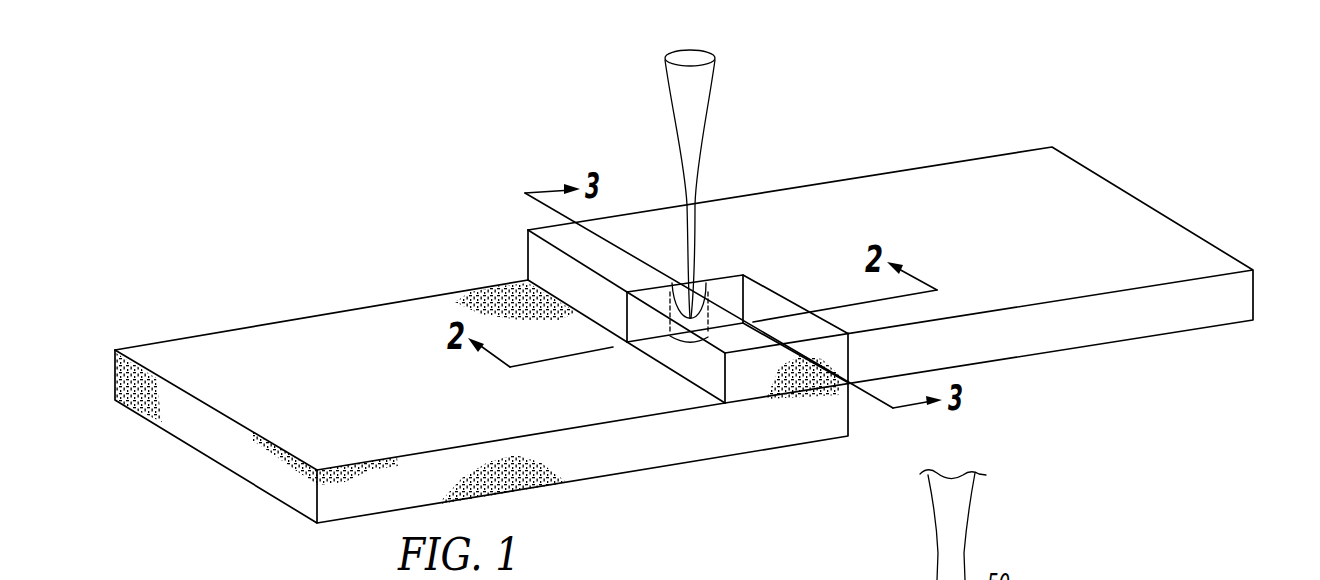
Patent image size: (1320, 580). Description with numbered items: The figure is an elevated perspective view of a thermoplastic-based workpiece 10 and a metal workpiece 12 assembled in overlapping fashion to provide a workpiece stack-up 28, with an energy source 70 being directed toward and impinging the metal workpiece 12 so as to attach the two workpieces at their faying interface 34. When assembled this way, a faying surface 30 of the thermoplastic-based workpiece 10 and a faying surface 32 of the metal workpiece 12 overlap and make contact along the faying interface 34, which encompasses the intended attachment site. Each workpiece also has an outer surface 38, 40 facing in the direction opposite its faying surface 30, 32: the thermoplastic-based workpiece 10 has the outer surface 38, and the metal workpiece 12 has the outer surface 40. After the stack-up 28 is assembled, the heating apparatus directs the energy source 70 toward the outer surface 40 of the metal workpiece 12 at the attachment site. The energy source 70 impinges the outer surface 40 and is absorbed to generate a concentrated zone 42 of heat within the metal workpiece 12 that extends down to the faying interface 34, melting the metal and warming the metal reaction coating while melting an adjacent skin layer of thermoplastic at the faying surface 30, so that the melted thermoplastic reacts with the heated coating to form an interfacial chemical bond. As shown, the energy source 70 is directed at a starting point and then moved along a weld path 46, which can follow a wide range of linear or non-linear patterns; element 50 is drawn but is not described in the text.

The thermoplastic-based workpiece 10 is at (101, 347).
The metal workpiece 12 is at (1050, 140).
The workpiece stack-up 28 is at (848, 450).
The faying surface of the thermoplastic-based workpiece 30 is at (731, 390).
The faying surface of the metal workpiece 32 is at (752, 418).
The faying interface 34 is at (793, 392).
The outer surface of the thermoplastic-based workpiece 38 is at (672, 468).
The outer surface of the metal workpiece 40 is at (833, 208).
The concentrated zone of heat 42 is at (704, 317).
The weld path 46 is at (648, 263).
The laser beam axis 50 is at (694, 240).
The energy source 70 is at (712, 123).